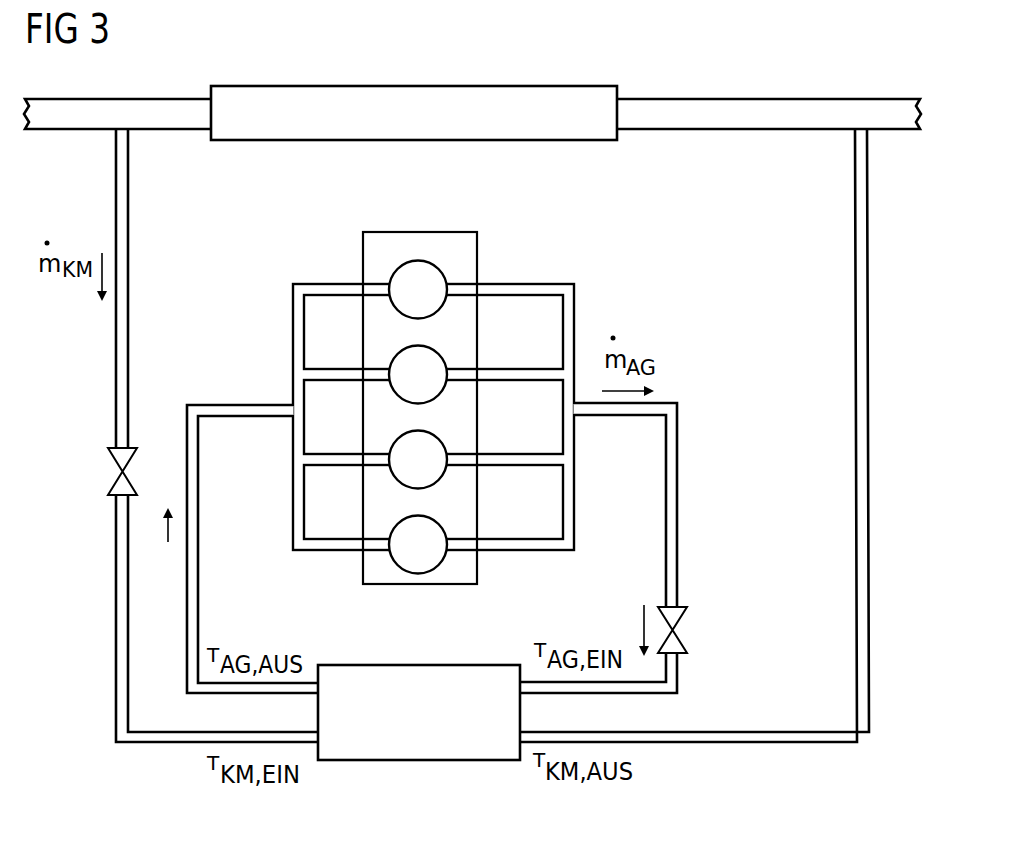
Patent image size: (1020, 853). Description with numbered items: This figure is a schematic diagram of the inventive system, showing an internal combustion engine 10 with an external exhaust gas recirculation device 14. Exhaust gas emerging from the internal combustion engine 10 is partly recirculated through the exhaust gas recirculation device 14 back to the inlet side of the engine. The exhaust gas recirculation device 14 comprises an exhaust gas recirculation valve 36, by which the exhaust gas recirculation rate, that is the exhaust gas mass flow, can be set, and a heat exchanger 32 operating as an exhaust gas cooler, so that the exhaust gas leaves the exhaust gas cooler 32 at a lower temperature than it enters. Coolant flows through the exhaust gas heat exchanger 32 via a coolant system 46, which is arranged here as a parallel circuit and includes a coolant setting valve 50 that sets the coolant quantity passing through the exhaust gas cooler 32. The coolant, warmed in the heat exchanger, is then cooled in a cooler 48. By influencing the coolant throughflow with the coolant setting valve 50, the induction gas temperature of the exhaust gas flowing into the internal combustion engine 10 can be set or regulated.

The internal combustion engine 10 is at (465, 243).
The exhaust gas recirculation device 14 is at (670, 503).
The exhaust gas heat exchanger 32 is at (417, 763).
The exhaust gas recirculation valve 36 is at (683, 615).
The coolant system 46 is at (157, 745).
The cooler 48 is at (413, 86).
The coolant setting valve 50 is at (117, 477).